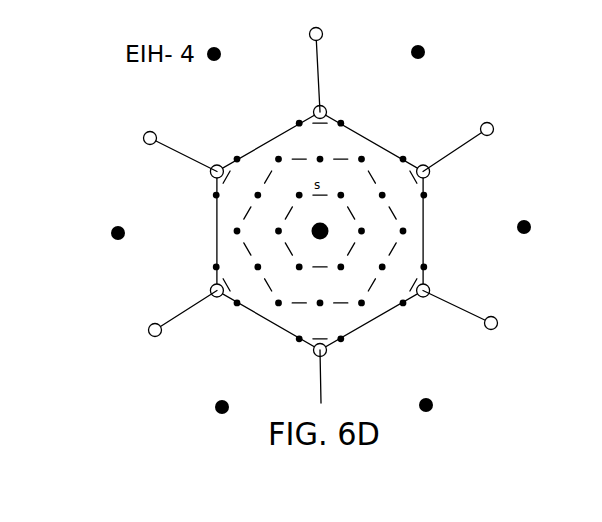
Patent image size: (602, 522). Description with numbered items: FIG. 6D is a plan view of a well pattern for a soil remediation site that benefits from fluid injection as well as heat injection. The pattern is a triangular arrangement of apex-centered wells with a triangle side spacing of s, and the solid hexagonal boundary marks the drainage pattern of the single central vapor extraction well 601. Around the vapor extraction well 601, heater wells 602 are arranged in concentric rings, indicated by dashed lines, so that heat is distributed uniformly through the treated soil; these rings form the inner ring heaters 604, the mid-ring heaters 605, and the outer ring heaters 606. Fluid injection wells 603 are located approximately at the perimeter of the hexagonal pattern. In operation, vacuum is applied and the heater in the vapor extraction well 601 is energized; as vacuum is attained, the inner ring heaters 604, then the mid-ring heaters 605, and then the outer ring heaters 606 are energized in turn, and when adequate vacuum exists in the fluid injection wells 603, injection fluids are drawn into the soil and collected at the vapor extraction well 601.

The vapor extraction well 601 is at (257, 297).
The heater well 602 is at (259, 231).
The fluid injection well 603 is at (313, 107).
The inner ring heaters 604 is at (423, 224).
The mid-ring heaters 605 is at (390, 250).
The outer ring heaters 606 is at (323, 216).